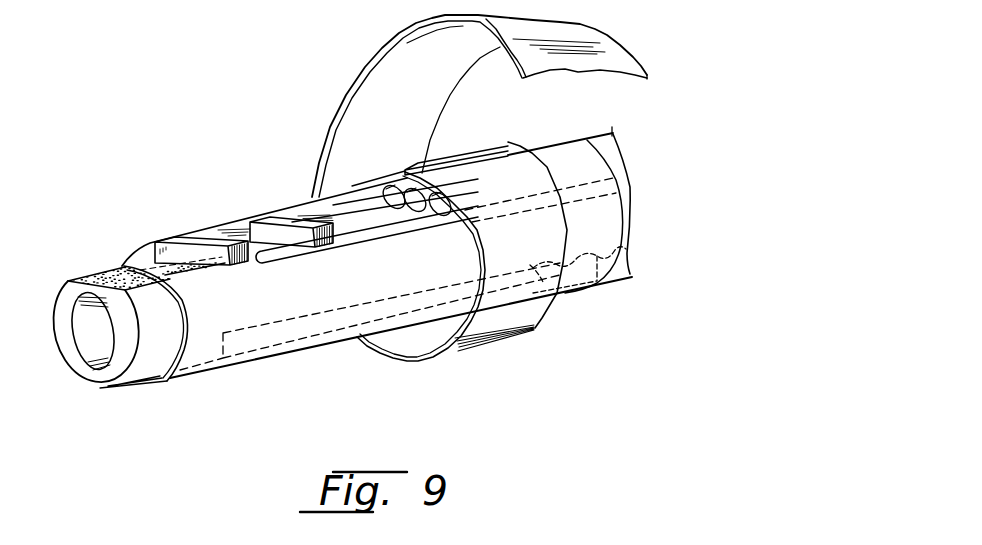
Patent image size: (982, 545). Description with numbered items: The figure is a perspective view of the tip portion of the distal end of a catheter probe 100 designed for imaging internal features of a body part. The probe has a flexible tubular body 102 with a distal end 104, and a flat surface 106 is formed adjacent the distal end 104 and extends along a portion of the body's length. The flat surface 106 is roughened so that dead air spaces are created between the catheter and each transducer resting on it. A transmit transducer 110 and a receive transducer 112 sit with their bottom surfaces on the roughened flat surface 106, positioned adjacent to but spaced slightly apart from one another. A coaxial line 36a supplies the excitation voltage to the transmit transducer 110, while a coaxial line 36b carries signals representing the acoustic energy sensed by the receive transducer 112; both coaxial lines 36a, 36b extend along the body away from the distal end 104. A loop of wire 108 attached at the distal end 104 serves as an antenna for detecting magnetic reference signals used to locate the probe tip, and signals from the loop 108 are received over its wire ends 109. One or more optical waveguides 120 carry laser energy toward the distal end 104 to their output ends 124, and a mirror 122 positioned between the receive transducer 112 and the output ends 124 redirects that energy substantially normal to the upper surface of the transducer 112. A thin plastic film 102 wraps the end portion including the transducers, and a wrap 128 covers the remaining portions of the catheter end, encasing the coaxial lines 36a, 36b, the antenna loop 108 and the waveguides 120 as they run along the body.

The catheter probe 100 is at (184, 382).
The film 102 is at (208, 327).
The distal end 104 is at (78, 362).
The flat surface 106 is at (100, 278).
The loop of wire 108 is at (298, 318).
The wire ends 109 is at (601, 282).
The transmit transducer 110 is at (215, 237).
The receive transducer 112 is at (296, 216).
The optical waveguides 120 is at (422, 189).
The mirror 122 is at (356, 200).
The output ends 124 is at (452, 194).
The wrap 128 is at (607, 33).
The coaxial line 36a is at (375, 197).
The coaxial line 36b is at (317, 254).